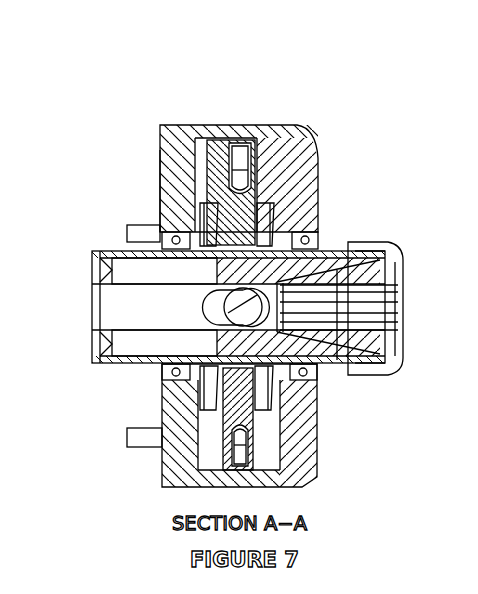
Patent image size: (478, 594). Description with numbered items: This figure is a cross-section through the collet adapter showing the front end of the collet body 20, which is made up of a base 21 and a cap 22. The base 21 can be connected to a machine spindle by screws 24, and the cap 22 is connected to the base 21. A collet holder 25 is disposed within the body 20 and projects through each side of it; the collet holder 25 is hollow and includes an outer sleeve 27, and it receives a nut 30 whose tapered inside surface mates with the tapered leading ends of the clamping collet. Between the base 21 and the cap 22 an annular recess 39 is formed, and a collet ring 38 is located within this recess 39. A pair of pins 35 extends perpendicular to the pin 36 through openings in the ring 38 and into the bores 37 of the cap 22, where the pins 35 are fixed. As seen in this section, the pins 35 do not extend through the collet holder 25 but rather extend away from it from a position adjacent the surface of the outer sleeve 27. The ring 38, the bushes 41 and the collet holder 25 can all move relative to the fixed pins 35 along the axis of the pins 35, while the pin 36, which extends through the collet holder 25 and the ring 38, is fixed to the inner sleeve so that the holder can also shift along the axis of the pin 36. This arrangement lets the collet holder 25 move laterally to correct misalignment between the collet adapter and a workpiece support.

The body 20 is at (250, 130).
The base 21 is at (172, 140).
The cap 22 is at (304, 140).
The screws 24 is at (129, 447).
The collet holder 25 is at (118, 364).
The outer sleeve 27 is at (118, 250).
The nut 30 is at (396, 253).
The pins 35 is at (244, 192).
The pin 36 is at (240, 311).
The bores 37 is at (217, 138).
The collet ring 38 is at (204, 206).
The annular recess 39 is at (160, 168).
The bushes 41 is at (280, 240).